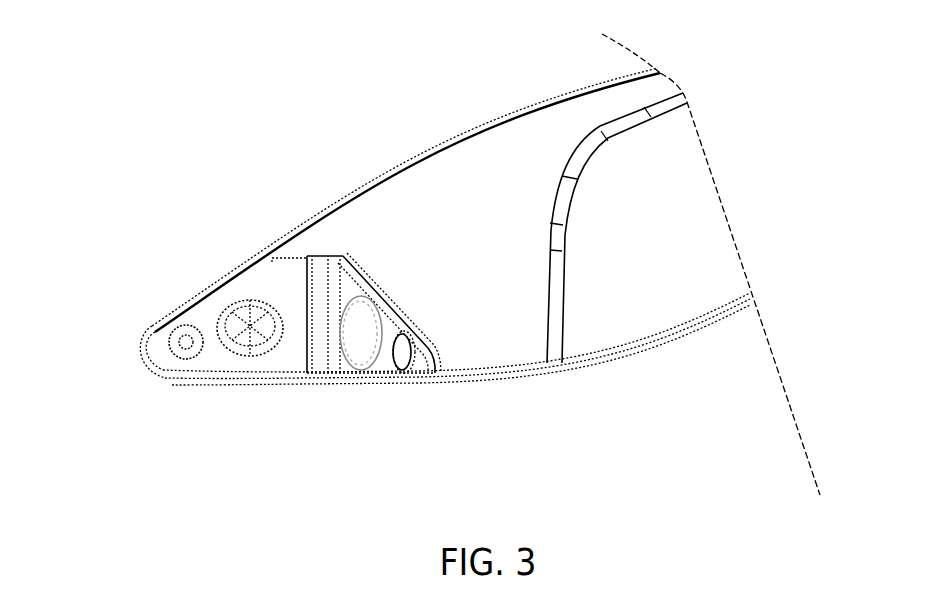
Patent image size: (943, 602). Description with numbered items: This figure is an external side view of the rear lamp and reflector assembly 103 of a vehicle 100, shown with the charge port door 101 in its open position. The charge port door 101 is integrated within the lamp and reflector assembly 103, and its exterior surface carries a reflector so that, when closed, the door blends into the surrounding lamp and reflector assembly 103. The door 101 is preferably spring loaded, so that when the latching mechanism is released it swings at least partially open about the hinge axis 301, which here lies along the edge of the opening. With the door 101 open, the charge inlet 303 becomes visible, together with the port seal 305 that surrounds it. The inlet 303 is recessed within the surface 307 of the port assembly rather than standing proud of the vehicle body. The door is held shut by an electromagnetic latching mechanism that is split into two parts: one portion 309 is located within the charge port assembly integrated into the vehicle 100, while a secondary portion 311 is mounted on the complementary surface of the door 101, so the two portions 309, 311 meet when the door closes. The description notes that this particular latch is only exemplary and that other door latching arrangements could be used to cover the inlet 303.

The vehicle 100 is at (50, 254).
The charge port door 101 is at (383, 283).
The rear vehicle lamp and reflector assembly 103 is at (603, 257).
The hinge axis 301 is at (308, 346).
The charge inlet 303 is at (233, 326).
The port seal 305 is at (357, 327).
The surface of the port assembly 307 is at (257, 292).
The portion of electromagnetic latching mechanism 309 is at (182, 343).
The secondary portion of latching mechanism 311 is at (407, 353).